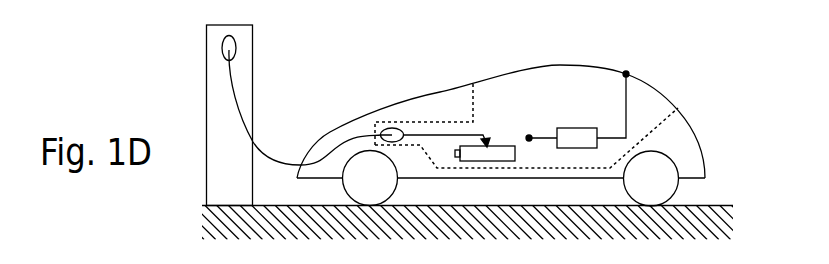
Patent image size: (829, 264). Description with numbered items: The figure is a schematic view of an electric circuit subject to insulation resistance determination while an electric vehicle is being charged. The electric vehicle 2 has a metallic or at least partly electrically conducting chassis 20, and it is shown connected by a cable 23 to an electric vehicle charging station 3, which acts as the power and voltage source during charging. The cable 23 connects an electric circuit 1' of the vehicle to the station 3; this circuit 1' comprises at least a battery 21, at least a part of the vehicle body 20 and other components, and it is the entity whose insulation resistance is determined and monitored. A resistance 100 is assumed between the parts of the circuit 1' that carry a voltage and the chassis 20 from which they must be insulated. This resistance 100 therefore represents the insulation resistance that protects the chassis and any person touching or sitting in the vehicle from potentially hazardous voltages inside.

The electric vehicle 2 is at (501, 105).
The electric vehicle charging station 3 is at (207, 52).
The cable 23 is at (258, 150).
The electric circuit 1' is at (526, 112).
The chassis 20 is at (562, 65).
The battery 21 is at (498, 146).
The resistance 100 is at (584, 128).